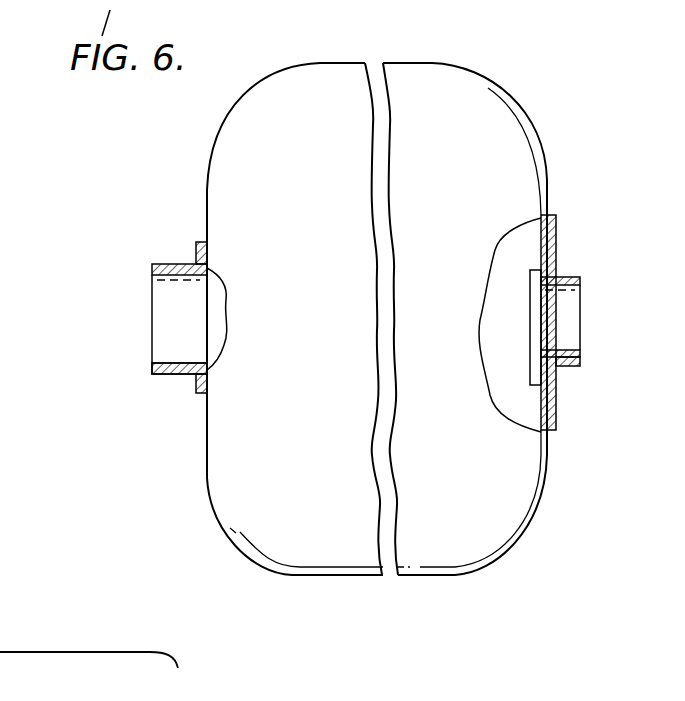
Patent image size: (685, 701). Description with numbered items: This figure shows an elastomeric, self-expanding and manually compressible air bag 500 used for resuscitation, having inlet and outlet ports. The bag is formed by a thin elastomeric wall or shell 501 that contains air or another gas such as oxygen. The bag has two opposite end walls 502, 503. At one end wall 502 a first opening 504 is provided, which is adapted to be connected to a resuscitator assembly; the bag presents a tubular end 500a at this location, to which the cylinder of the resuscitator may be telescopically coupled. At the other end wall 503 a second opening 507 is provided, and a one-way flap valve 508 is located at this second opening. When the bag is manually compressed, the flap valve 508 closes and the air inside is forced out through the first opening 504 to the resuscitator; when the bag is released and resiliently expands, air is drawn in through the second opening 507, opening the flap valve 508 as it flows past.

The elastomeric bag 500 is at (383, 330).
The tubular end of the bag 500a is at (152, 378).
The elastomeric wall or shell 501 is at (407, 537).
The end wall 502 is at (207, 193).
The end wall 503 is at (547, 180).
The first opening 504 is at (170, 307).
The second opening 507 is at (572, 302).
The one-way flap valve 508 is at (537, 338).